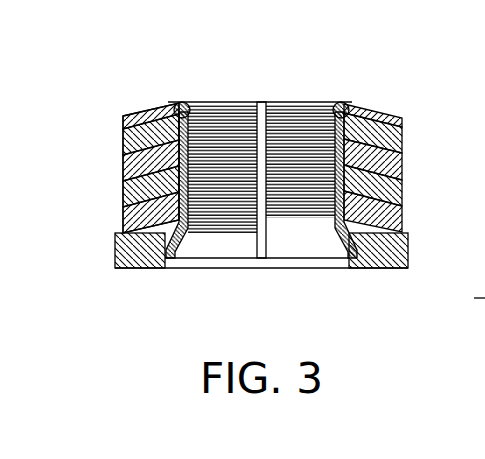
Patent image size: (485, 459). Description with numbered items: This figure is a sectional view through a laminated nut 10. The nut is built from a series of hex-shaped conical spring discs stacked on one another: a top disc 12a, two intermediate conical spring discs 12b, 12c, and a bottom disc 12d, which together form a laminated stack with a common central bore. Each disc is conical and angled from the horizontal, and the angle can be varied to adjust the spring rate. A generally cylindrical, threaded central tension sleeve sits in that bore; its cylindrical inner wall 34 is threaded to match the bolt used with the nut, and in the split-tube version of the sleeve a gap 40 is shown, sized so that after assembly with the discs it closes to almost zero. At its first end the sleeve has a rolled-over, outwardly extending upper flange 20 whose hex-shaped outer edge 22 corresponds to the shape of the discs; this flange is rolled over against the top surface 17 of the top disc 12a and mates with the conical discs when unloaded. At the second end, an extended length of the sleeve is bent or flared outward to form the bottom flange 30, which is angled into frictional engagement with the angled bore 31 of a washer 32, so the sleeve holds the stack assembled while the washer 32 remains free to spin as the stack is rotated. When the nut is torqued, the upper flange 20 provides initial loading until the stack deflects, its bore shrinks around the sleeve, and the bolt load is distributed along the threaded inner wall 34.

The laminated nut 10 is at (275, 172).
The top disc 12a is at (403, 140).
The conical spring disc 12b is at (403, 167).
The conical spring disc 12c is at (403, 193).
The bottom disc 12d is at (403, 220).
The top surface 17 is at (393, 117).
The upper flange 20 is at (361, 96).
The outer edge 22 is at (122, 126).
The bottom flange 30 is at (186, 268).
The angled bore 31 is at (352, 269).
The washer 32 is at (398, 254).
The inner wall 34 is at (293, 236).
The gap 40 is at (263, 100).